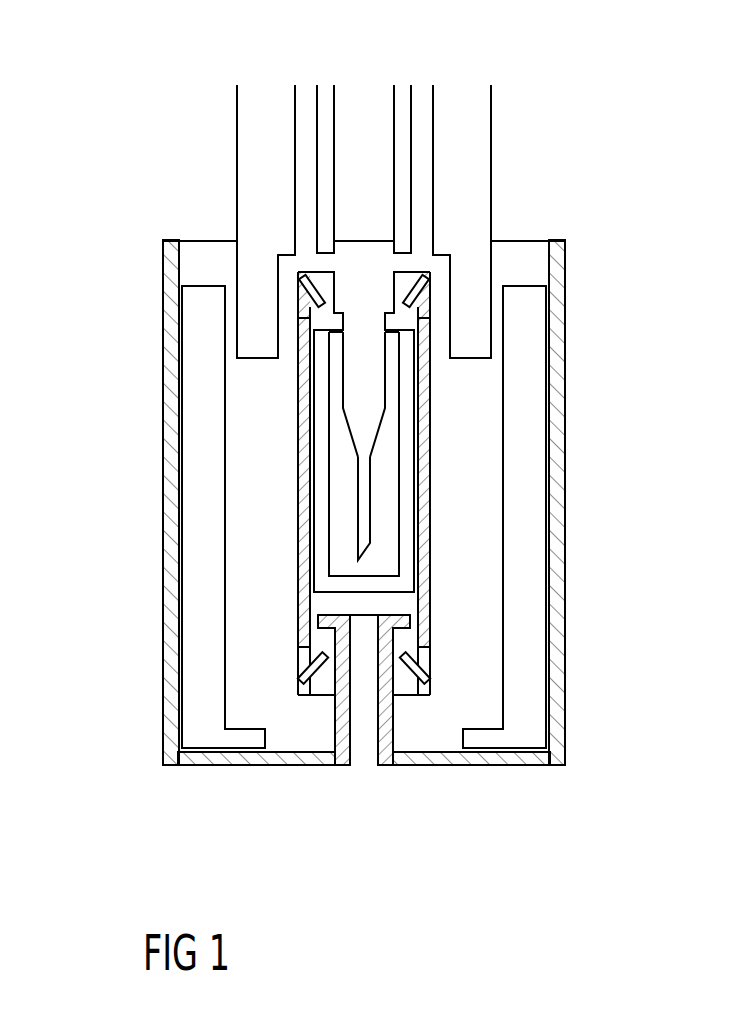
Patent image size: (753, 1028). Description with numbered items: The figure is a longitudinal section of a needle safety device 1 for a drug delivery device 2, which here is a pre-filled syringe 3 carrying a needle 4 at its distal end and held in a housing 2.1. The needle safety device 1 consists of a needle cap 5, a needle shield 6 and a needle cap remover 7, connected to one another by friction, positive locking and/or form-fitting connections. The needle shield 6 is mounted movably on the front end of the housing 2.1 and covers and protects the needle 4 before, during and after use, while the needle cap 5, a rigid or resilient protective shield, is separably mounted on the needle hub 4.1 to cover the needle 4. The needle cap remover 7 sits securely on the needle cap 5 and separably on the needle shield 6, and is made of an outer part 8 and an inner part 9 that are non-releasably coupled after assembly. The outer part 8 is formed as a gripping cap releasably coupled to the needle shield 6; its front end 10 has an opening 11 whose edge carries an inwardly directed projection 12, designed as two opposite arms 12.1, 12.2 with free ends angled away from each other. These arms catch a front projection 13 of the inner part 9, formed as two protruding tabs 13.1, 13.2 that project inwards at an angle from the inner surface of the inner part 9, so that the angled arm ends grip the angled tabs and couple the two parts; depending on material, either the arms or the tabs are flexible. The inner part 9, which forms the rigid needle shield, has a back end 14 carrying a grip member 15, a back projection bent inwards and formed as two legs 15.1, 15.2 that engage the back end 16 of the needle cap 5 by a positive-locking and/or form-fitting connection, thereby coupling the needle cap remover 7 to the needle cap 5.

The needle safety device 1 is at (346, 442).
The drug delivery device 2 is at (222, 81).
The housing 2.1 is at (475, 98).
The pre-filled syringe 3 is at (325, 98).
The needle 4 is at (355, 446).
The needle hub 4.1 is at (357, 366).
The needle cap 5 is at (320, 457).
The needle shield 6 is at (533, 398).
The needle cap remover 7 is at (255, 773).
The outer part 8 is at (553, 450).
The inner part 9 is at (300, 528).
The front end 10 is at (514, 764).
The opening 11 is at (362, 750).
The projection 12 is at (369, 706).
The opposite arm 12.1 is at (340, 644).
The opposite arm 12.2 is at (388, 644).
The front projection 13 is at (369, 726).
The protruding tab 13.1 is at (302, 667).
The protruding tab 13.2 is at (425, 667).
The back end 14 is at (290, 317).
The grip member 15 is at (371, 220).
The leg 15.1 is at (305, 278).
The leg 15.2 is at (430, 270).
The back end 16 is at (412, 322).